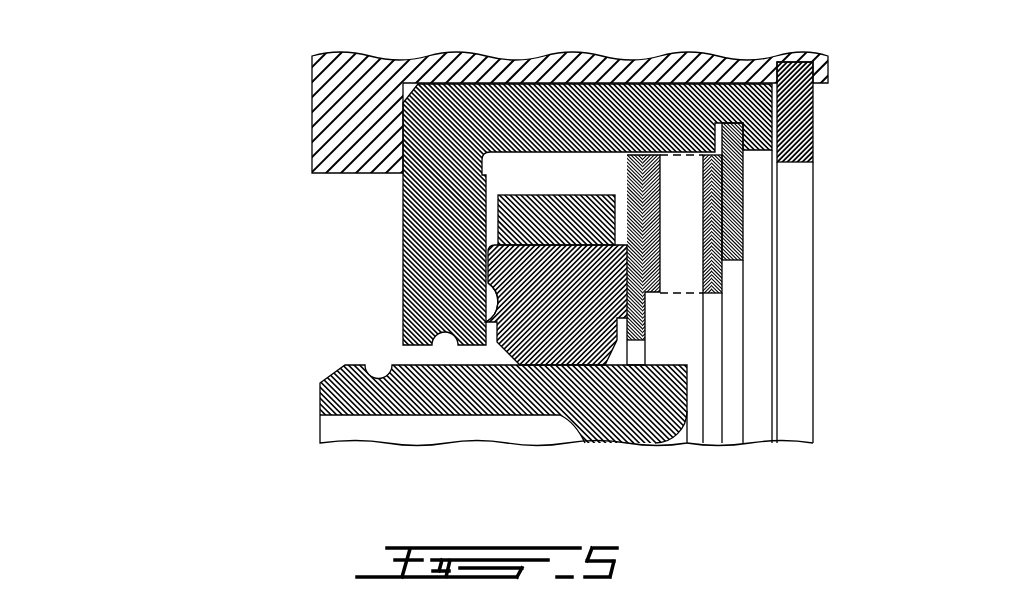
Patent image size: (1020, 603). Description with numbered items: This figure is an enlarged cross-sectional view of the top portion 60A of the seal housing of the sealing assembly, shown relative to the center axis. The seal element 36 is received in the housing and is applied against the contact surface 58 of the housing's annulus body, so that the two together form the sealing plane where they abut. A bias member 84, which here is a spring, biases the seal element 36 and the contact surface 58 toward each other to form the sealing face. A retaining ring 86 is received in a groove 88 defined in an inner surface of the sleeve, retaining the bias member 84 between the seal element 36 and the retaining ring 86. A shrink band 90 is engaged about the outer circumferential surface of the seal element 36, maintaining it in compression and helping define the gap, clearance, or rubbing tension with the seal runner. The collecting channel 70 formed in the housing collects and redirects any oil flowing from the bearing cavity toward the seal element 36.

The top portion 60A is at (128, 118).
The collecting channel 70 is at (434, 318).
The shrink band 90 is at (549, 217).
The seal element 36 is at (518, 357).
The contact surface 58 is at (486, 322).
The bias member 84 is at (683, 170).
The retaining ring 86 is at (731, 243).
The groove 88 is at (745, 143).